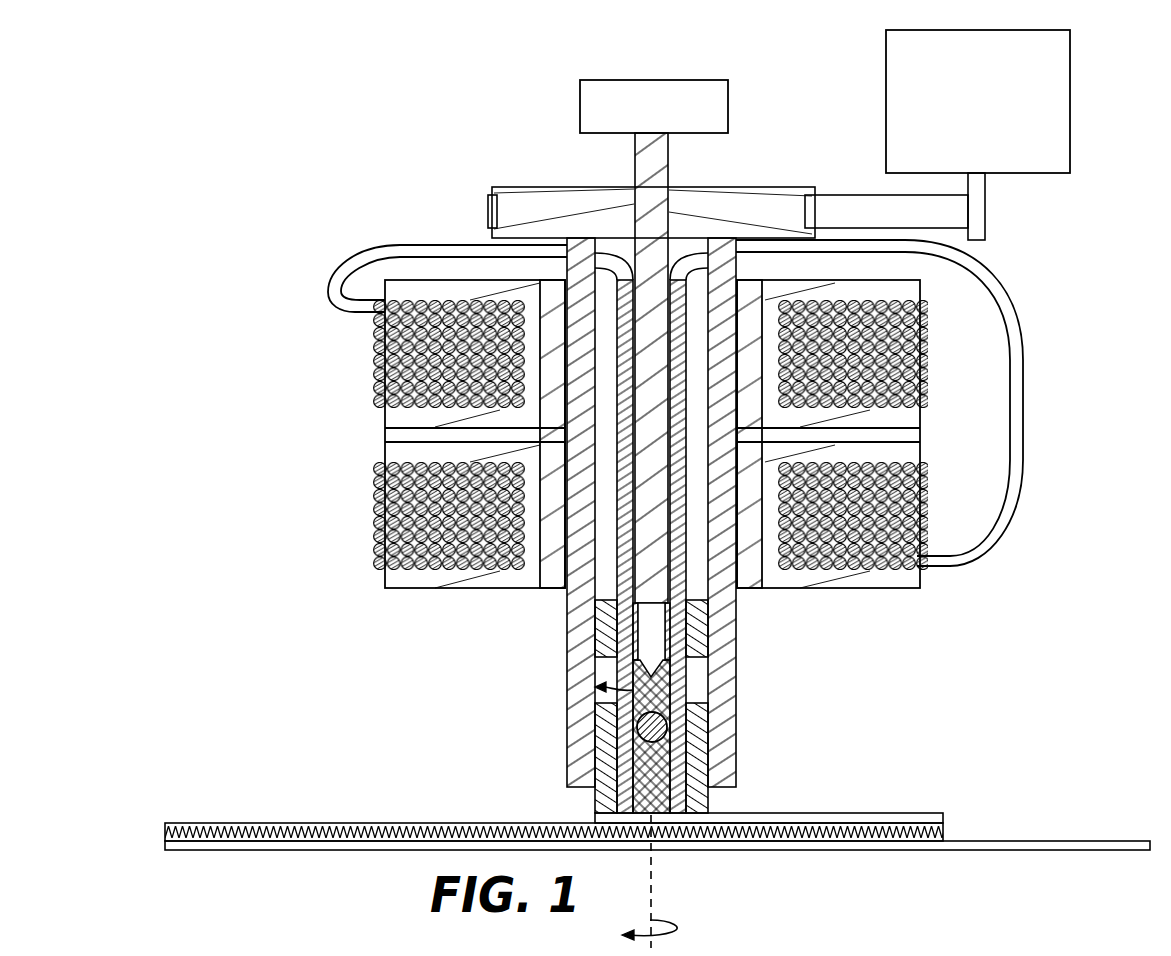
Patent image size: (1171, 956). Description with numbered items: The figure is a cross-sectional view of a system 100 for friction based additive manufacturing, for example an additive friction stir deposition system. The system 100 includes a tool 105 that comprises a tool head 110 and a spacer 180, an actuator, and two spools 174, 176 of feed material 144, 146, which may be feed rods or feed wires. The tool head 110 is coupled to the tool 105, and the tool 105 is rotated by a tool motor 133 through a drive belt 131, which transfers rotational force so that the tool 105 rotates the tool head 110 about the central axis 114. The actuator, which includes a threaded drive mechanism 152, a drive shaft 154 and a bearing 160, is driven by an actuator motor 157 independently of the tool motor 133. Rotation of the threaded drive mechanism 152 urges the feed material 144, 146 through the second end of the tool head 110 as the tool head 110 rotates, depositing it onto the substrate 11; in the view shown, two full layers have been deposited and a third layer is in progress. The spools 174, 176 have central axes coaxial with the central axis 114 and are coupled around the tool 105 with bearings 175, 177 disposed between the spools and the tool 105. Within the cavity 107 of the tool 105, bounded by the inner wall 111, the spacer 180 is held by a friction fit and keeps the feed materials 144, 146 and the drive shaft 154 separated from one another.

The system for friction based additive manufacturing 100 is at (128, 69).
The actuator motor 157 is at (670, 117).
The tool motor 133 is at (996, 118).
The drive belt 131 is at (843, 195).
The cavity 107 is at (699, 297).
The bearing 175 is at (553, 357).
The feed material 144 is at (368, 262).
The feed material 146 is at (998, 320).
The spool 174 is at (385, 430).
The spool 176 is at (897, 583).
The bearing 177 is at (550, 537).
The drive shaft 154 is at (637, 592).
The spacer 180 is at (698, 640).
The inner wall 111 is at (653, 692).
The tool 105 is at (728, 678).
The threaded drive mechanism 152 is at (655, 720).
The bearing 160 is at (653, 722).
The tool head 110 is at (598, 798).
The substrate 11 is at (1023, 841).
The central axis 114 is at (650, 912).